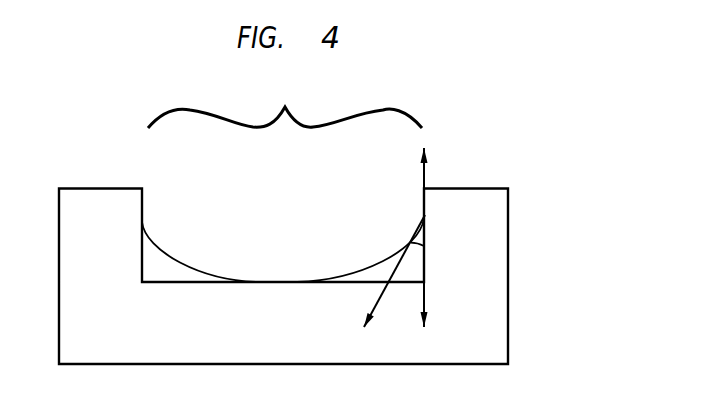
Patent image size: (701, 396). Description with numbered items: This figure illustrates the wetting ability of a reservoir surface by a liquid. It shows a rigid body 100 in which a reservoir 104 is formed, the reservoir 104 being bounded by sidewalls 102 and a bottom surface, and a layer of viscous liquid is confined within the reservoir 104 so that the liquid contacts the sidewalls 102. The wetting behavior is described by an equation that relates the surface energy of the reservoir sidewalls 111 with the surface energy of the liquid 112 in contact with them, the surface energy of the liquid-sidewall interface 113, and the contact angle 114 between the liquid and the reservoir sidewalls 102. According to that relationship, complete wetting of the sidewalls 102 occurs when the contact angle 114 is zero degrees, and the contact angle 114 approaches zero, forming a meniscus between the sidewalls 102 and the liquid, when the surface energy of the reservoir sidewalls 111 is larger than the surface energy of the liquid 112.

The rigid body 100 is at (508, 295).
The sidewalls 102 is at (142, 203).
The reservoir 104 is at (285, 100).
The surface energy of the reservoir sidewalls 111 is at (427, 173).
The surface energy of the liquid 112 is at (362, 304).
The surface energy of the liquid-sidewall interface 113 is at (427, 297).
The contact angle 114 is at (427, 240).